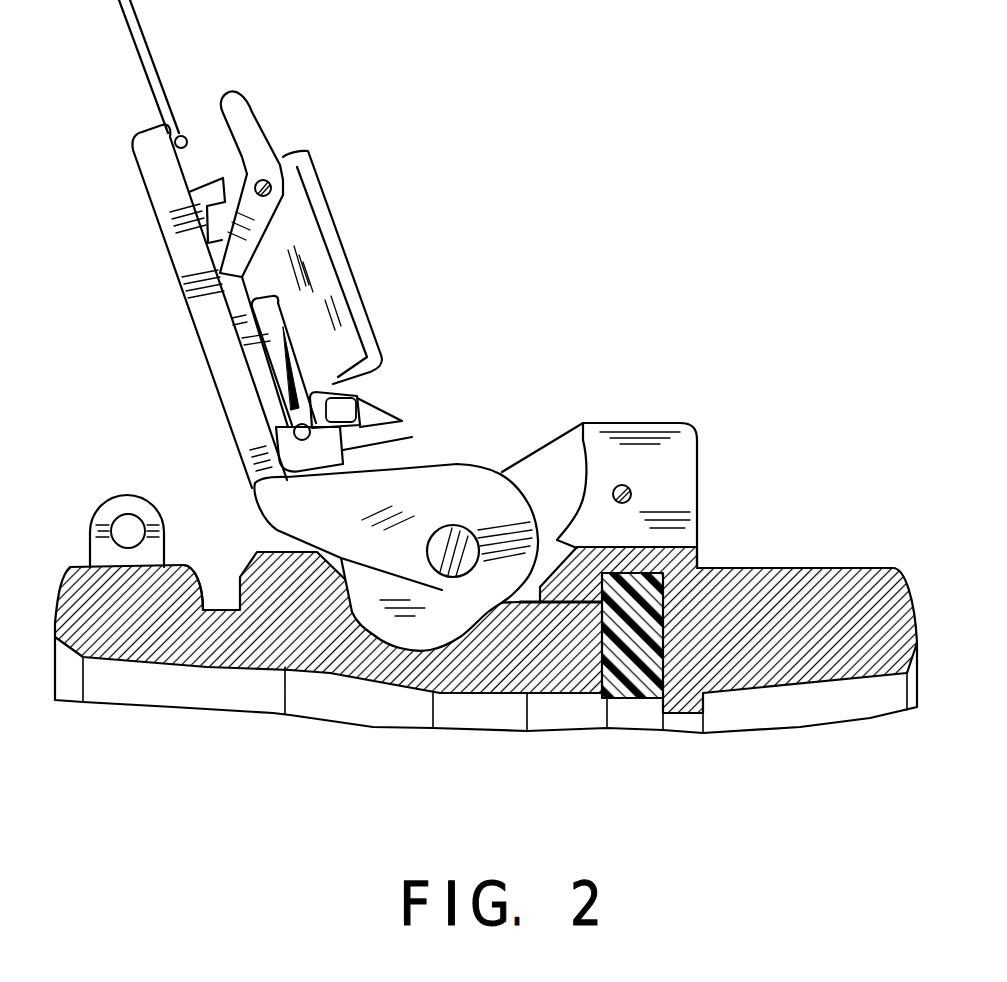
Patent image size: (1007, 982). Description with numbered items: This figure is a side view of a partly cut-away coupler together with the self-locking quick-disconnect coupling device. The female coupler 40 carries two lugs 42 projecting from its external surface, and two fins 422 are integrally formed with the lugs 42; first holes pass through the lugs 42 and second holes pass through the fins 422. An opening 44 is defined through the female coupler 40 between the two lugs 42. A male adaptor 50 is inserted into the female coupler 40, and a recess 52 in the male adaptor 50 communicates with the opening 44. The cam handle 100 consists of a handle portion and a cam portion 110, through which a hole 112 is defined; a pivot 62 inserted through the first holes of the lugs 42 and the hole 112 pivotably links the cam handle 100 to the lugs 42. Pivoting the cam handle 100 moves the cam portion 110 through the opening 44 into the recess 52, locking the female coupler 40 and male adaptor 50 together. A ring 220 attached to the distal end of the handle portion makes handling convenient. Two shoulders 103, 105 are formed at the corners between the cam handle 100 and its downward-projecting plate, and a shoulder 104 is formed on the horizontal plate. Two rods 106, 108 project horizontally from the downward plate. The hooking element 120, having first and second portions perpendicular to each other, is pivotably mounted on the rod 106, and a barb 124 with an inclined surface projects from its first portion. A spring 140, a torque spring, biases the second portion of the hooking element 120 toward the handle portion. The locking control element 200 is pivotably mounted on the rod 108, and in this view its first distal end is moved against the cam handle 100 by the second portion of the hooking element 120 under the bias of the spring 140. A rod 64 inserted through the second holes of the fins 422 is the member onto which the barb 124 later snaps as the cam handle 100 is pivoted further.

The female coupler 40 is at (868, 590).
The lugs 42 is at (557, 540).
The opening 44 is at (533, 590).
The male adaptor 50 is at (173, 593).
The recess 52 is at (393, 630).
The pivot 62 is at (443, 565).
The rod 64 is at (628, 492).
The cam handle 100 is at (176, 258).
The shoulder 103 is at (255, 482).
The shoulder 104 is at (333, 290).
The shoulder 105 is at (203, 217).
The rod 106 is at (295, 433).
The rod 108 is at (270, 187).
The cam portion 110 is at (493, 590).
The hole 112 is at (483, 517).
The hooking element 120 is at (272, 362).
The barb 124 is at (377, 418).
The spring 140 is at (323, 397).
The locking control element 200 is at (240, 130).
The ring 220 is at (145, 56).
The fins 422 is at (655, 437).